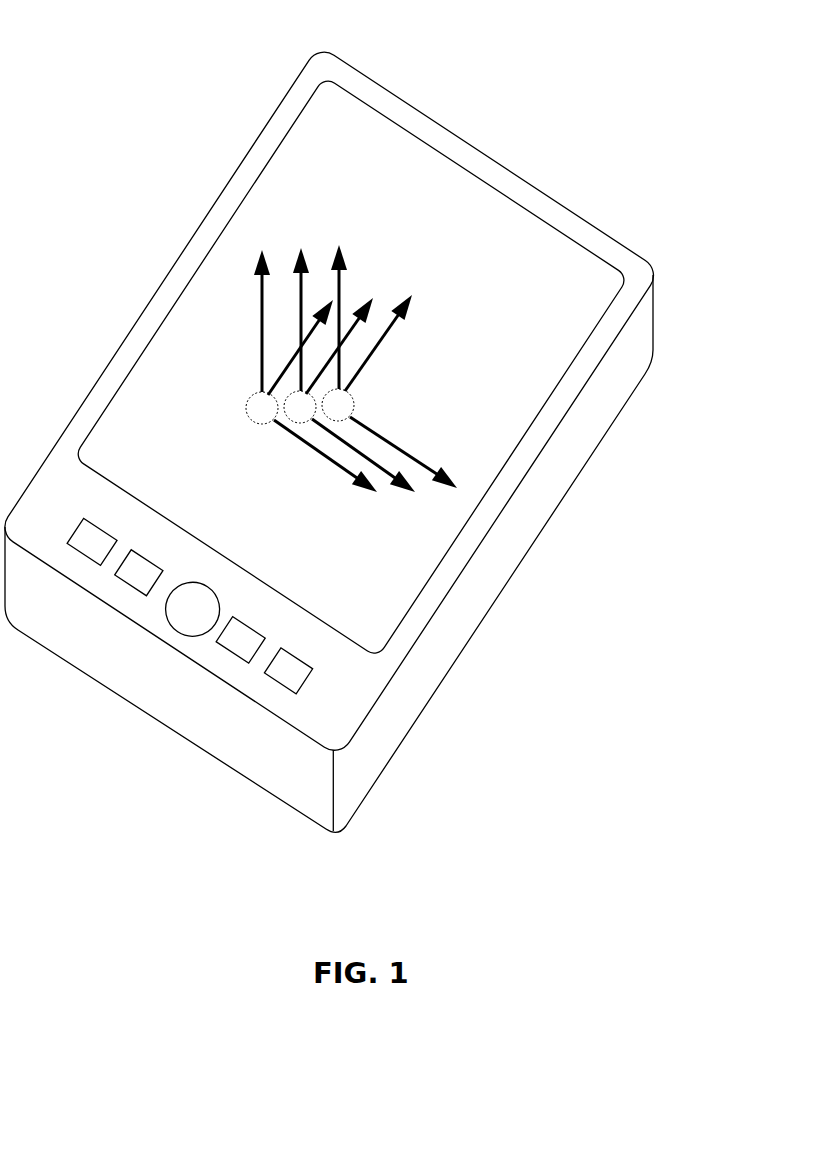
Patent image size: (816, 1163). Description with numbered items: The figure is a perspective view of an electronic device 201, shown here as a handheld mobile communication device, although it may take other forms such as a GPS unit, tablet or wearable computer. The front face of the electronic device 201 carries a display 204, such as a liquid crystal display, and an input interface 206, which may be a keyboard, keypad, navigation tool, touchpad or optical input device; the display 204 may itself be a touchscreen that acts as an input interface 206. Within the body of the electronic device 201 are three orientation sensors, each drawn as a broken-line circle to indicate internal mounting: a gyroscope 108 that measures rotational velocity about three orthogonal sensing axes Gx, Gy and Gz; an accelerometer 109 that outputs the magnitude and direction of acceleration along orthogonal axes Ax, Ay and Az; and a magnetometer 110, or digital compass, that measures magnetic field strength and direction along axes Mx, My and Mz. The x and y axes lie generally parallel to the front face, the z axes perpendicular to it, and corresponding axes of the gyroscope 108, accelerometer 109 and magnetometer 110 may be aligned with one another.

The electronic device 201 is at (392, 113).
The display 204 is at (190, 240).
The input interface 206 is at (83, 556).
The gyroscope 108 is at (253, 423).
The accelerometer 109 is at (300, 424).
The magnetometer 110 is at (357, 401).